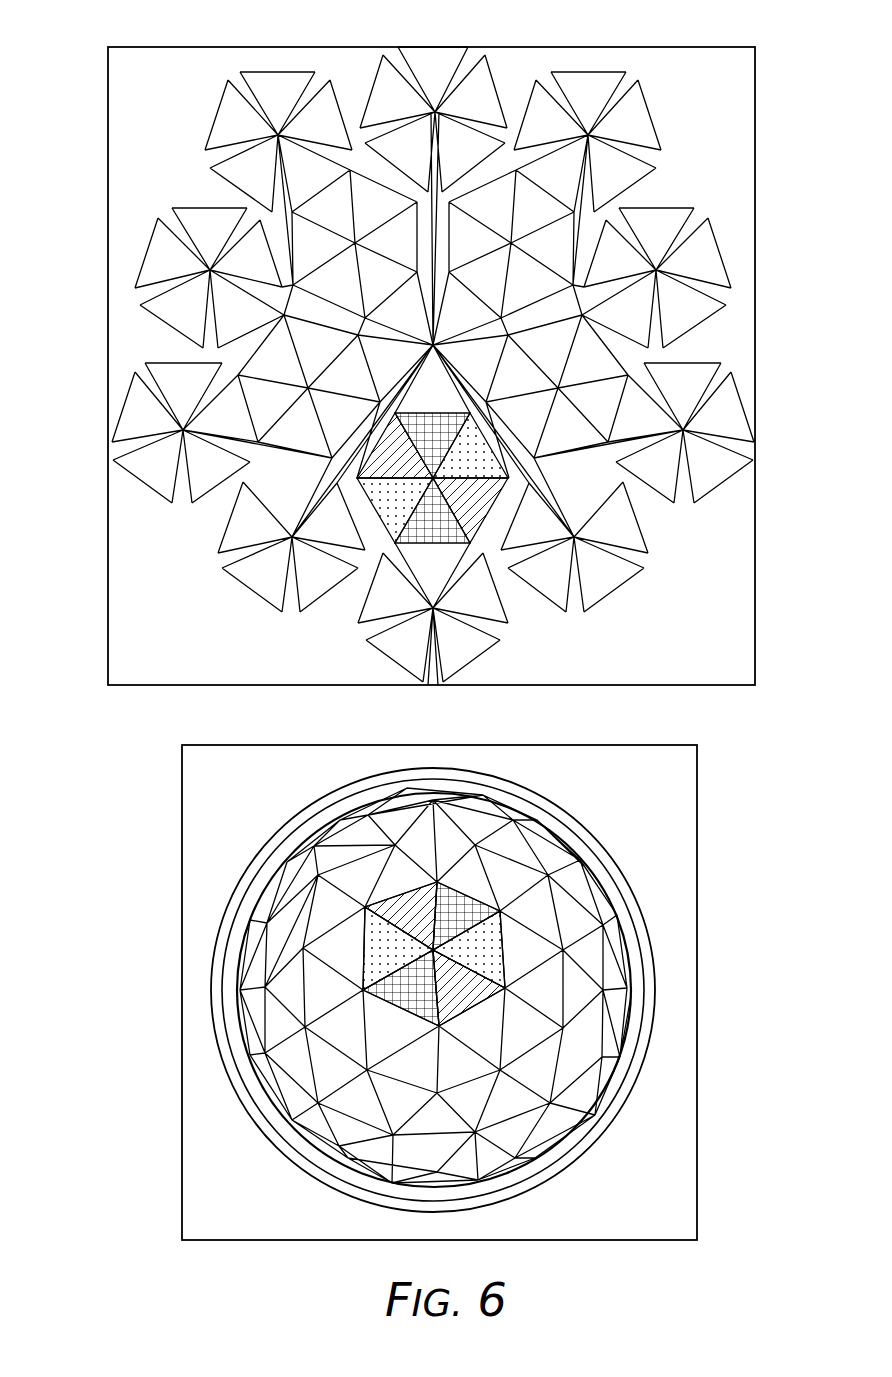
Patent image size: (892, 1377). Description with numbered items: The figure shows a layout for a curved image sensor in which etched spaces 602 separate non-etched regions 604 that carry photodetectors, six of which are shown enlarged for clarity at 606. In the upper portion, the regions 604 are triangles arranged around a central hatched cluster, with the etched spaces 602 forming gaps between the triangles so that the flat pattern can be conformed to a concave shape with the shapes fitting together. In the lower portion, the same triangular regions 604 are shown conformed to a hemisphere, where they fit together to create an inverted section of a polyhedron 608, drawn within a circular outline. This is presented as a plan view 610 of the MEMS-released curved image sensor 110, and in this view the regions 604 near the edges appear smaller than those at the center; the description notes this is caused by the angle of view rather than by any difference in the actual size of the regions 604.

The MEMS-released curved image sensor 110 is at (668, 1148).
The etched spaces 602 is at (436, 433).
The regions having photodetectors 604 is at (580, 353).
The photodetectors (enlarged for clarity) 606 is at (462, 565).
The inverted section of a polyhedron 608 is at (195, 878).
The plan view 610 is at (762, 835).